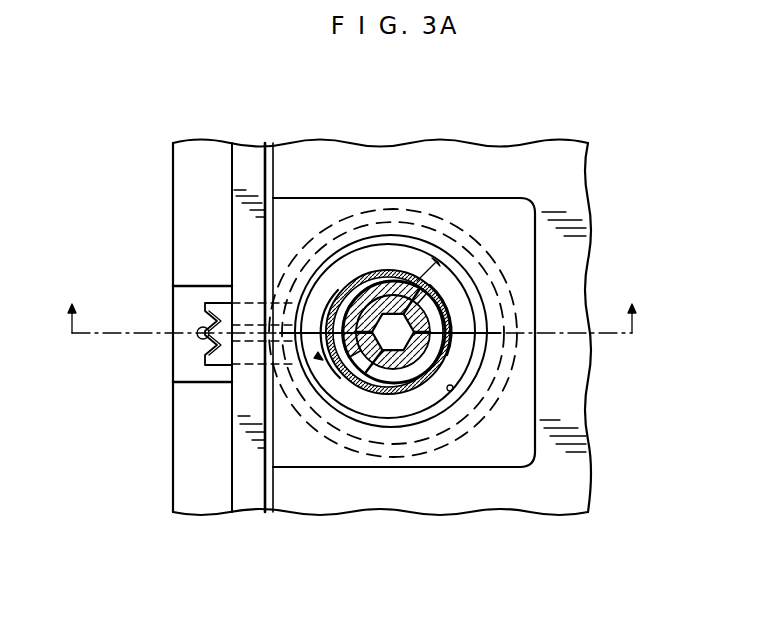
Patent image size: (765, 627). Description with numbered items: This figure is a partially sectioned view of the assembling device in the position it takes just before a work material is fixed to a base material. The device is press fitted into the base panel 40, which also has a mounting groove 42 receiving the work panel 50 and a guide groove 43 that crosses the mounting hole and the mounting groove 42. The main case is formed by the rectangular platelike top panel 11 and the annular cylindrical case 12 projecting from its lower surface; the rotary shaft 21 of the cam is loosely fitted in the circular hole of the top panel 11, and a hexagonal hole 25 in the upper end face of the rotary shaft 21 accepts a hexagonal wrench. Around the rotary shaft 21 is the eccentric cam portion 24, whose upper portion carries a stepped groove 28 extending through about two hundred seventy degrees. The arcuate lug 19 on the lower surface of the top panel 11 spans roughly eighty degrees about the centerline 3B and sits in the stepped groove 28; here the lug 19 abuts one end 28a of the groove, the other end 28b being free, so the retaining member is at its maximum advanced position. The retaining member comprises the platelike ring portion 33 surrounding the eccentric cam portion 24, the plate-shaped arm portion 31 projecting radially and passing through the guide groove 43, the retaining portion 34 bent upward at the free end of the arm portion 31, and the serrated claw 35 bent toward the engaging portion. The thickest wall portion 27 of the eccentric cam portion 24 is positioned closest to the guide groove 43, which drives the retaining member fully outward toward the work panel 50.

The top panel 11 is at (303, 202).
The cylindrical case 12 is at (441, 452).
The lug 19 is at (372, 268).
The rotary shaft 21 is at (420, 338).
The eccentric cam portion 24 is at (455, 285).
The hexagonal hole 25 is at (453, 390).
The thickest wall portion 27 is at (393, 383).
The stepped groove 28 is at (440, 407).
The one end of the stepped groove 28a is at (337, 300).
The other end of the stepped groove 28b is at (433, 290).
The arm portion 31 is at (281, 360).
The ring portion 33 is at (466, 432).
The retaining portion 34 is at (207, 322).
The serrated claw 35 is at (212, 309).
The base panel 40 is at (583, 200).
The mounting groove 42 is at (269, 152).
The guide groove 43 is at (189, 377).
The work panel 50 is at (246, 500).
The centerline 3B— 3B is at (353, 305).